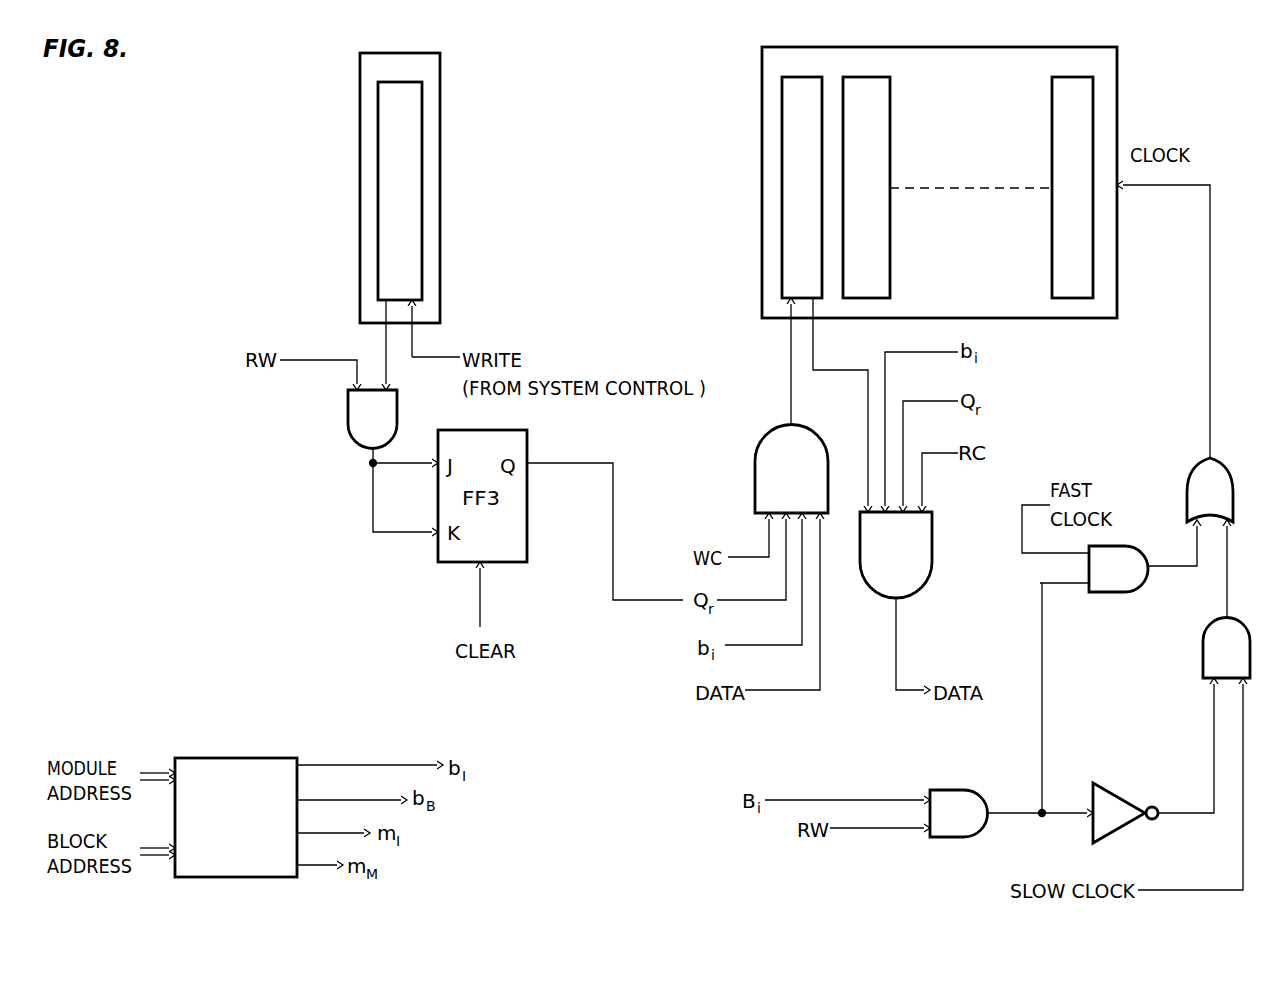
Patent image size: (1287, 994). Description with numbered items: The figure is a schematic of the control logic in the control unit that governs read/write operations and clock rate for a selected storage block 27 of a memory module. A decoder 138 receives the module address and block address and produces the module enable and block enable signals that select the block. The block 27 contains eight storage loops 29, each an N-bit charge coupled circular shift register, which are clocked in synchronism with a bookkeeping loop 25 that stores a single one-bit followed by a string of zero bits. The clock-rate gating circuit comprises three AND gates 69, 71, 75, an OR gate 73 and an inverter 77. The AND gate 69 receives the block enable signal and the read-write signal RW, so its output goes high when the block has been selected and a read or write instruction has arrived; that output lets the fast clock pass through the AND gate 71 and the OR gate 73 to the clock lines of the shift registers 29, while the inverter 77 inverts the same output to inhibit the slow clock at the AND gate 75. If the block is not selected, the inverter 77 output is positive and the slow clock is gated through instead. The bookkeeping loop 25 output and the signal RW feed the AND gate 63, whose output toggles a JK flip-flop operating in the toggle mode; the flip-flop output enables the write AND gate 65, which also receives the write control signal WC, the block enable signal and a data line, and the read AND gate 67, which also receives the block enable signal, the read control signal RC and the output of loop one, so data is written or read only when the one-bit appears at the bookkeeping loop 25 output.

The bookkeeping loop 25 is at (440, 90).
The storage block 27 is at (965, 170).
The storage loop 29 is at (861, 77).
The AND gate 63 is at (387, 427).
The write AND gate 65 is at (802, 484).
The read AND gate 67 is at (905, 559).
The AND gate 69 is at (968, 823).
The AND gate 71 is at (1120, 584).
The OR gate 73 is at (1222, 506).
The AND gate 75 is at (1240, 666).
The inverter 77 is at (1124, 802).
The decoder 138 is at (240, 870).